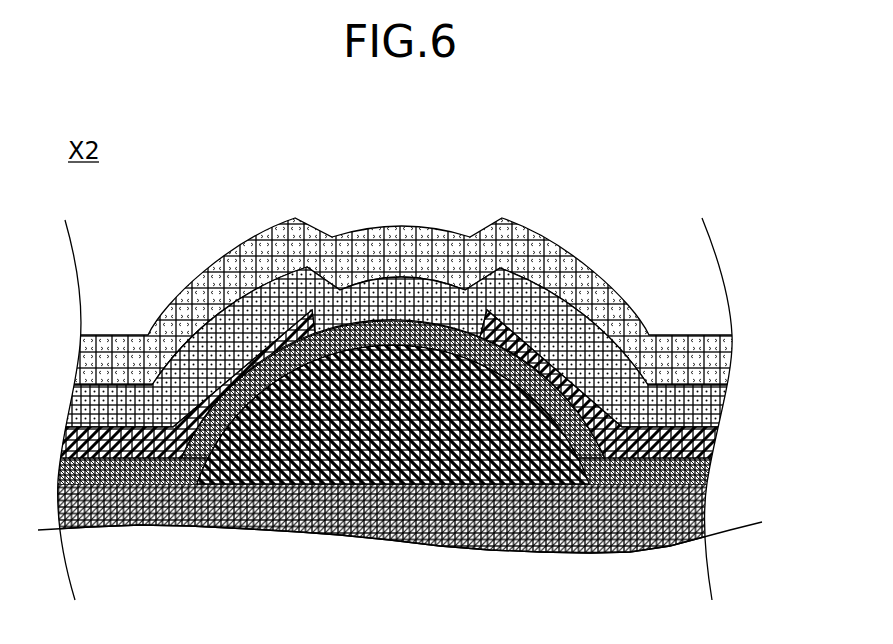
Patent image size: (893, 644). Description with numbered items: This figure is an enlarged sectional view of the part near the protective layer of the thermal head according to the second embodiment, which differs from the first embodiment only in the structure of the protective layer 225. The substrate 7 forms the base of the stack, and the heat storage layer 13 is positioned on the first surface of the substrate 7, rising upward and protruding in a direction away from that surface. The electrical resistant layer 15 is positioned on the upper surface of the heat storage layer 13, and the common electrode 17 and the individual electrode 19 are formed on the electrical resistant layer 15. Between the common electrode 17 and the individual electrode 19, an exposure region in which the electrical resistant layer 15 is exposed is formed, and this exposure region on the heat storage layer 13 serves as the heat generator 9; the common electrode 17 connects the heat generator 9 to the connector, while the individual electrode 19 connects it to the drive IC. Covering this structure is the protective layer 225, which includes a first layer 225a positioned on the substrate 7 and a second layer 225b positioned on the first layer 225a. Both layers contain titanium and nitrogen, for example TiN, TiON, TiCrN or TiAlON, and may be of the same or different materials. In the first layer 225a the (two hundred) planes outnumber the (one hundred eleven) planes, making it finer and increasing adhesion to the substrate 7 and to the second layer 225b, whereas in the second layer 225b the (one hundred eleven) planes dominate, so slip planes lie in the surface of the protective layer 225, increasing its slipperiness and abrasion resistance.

The substrate 7 is at (688, 498).
The heat generator 9 is at (407, 330).
The heat storage layer 13 is at (300, 423).
The electrical resistant layer 15 is at (145, 467).
The common electrode 17 is at (220, 392).
The individual electrode 19 is at (690, 442).
The protective layer 225 is at (400, 265).
The first layer 225a is at (250, 158).
The second layer 225b is at (262, 270).